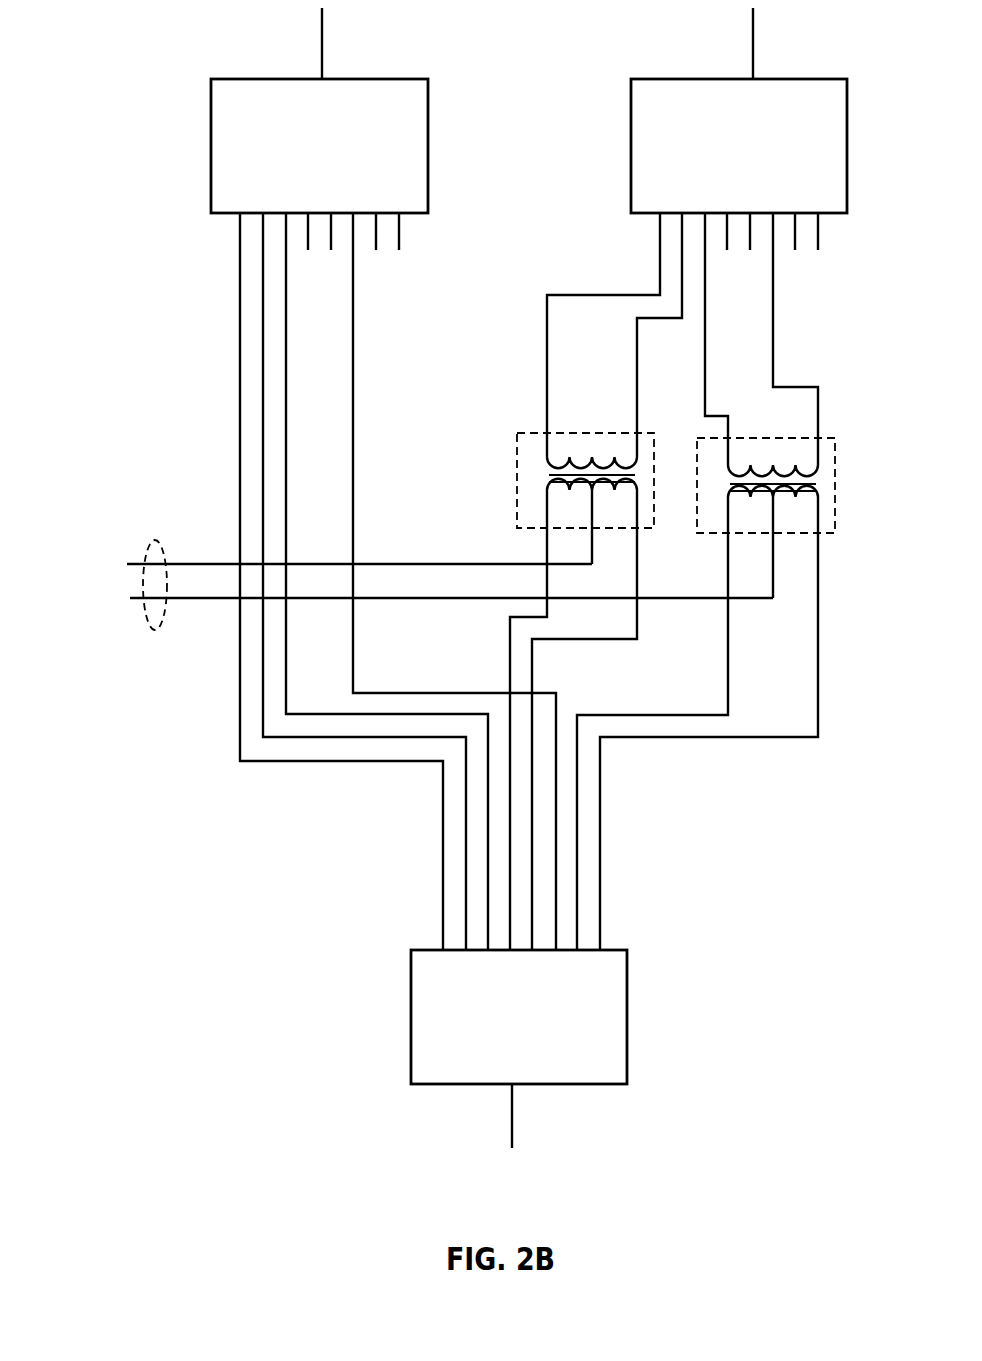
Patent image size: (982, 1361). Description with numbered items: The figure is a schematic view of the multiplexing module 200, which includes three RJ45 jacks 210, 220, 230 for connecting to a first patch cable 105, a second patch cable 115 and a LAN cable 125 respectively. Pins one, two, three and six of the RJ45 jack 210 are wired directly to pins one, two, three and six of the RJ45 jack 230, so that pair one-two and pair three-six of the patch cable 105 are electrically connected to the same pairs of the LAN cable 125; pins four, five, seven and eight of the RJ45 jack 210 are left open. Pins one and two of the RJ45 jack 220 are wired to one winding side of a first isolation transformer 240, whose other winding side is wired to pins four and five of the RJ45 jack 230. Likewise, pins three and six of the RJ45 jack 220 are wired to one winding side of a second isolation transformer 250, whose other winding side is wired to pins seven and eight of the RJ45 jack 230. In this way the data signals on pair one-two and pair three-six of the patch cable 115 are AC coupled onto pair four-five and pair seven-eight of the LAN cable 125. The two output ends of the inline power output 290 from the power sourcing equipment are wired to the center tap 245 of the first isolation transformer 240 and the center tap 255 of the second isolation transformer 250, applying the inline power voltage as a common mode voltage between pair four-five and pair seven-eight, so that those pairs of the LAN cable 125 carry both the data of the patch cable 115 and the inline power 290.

The multiplexing module 200 is at (147, 210).
The patch cable 105 is at (318, 50).
The patch cable 115 is at (748, 50).
The LAN cable 125 is at (505, 1107).
The RJ45 jack 210 is at (432, 192).
The RJ45 jack 220 is at (628, 165).
The RJ45 jack 230 is at (408, 1010).
The first isolation transformer 240 is at (540, 428).
The center tap 245 is at (593, 535).
The second isolation transformer 250 is at (820, 425).
The center tap 255 is at (776, 560).
The inline power output 290 is at (150, 535).